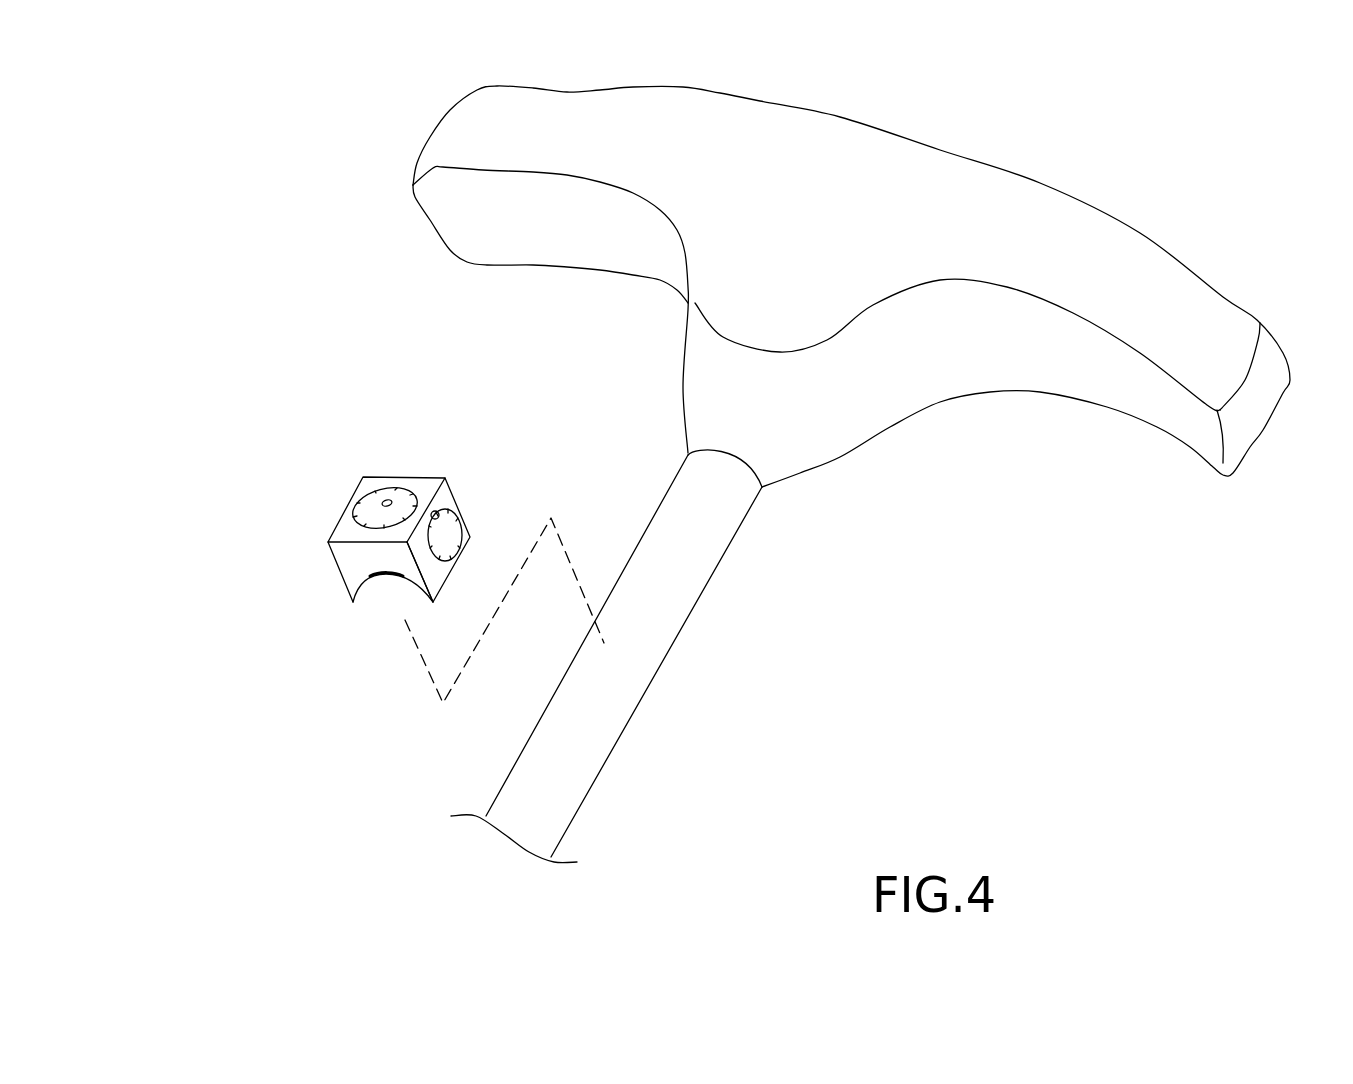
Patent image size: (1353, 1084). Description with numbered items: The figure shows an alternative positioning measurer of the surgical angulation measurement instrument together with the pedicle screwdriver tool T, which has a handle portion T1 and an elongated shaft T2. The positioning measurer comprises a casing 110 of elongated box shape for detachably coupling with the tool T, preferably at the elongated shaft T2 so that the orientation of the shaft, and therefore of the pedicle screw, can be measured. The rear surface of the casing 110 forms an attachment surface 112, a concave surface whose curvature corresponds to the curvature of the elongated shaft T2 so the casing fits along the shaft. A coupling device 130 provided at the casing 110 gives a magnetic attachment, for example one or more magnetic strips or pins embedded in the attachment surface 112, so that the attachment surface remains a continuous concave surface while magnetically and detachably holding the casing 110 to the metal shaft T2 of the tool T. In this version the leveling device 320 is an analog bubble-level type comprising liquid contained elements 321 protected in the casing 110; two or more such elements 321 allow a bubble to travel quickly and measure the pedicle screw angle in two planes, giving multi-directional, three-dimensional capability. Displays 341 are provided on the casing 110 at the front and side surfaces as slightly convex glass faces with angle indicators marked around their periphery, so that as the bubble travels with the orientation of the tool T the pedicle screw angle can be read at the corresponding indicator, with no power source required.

The casing 110 is at (356, 566).
The attachment surface 112 is at (371, 608).
The coupling device 130 is at (387, 580).
The leveling device 320 is at (474, 426).
The liquid contained element 321 is at (600, 373).
The display 341 is at (350, 488).
The tool T is at (851, 474).
The handle portion T1 is at (877, 350).
The elongated shaft T2 is at (613, 656).